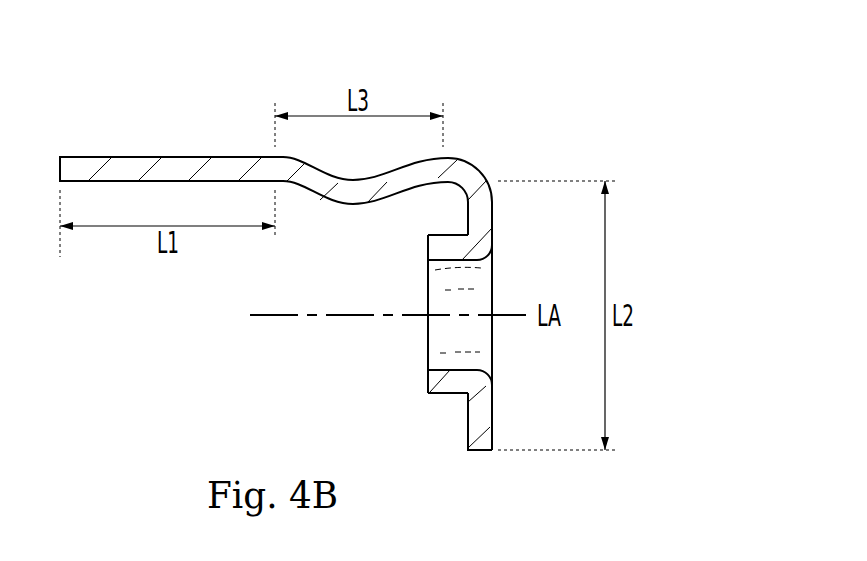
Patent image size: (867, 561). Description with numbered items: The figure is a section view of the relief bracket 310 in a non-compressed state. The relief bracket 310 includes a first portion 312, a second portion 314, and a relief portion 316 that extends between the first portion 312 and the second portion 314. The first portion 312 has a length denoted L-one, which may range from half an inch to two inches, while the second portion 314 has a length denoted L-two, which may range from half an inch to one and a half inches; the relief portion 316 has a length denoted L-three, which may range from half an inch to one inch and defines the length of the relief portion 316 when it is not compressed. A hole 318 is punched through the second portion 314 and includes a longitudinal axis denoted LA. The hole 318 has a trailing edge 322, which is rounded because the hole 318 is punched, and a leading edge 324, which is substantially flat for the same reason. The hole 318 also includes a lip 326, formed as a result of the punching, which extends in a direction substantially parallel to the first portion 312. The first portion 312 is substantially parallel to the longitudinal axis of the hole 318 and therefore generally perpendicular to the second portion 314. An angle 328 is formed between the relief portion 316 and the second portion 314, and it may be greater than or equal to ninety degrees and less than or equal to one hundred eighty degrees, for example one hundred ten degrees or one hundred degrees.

The relief bracket 310 is at (510, 110).
The first portion 312 is at (176, 155).
The second portion 314 is at (495, 213).
The relief portion 316 is at (340, 205).
The hole 318 is at (427, 342).
The trailing edge 322 is at (495, 262).
The leading edge 324 is at (427, 252).
The lip 326 is at (445, 398).
The angle 328 is at (436, 199).